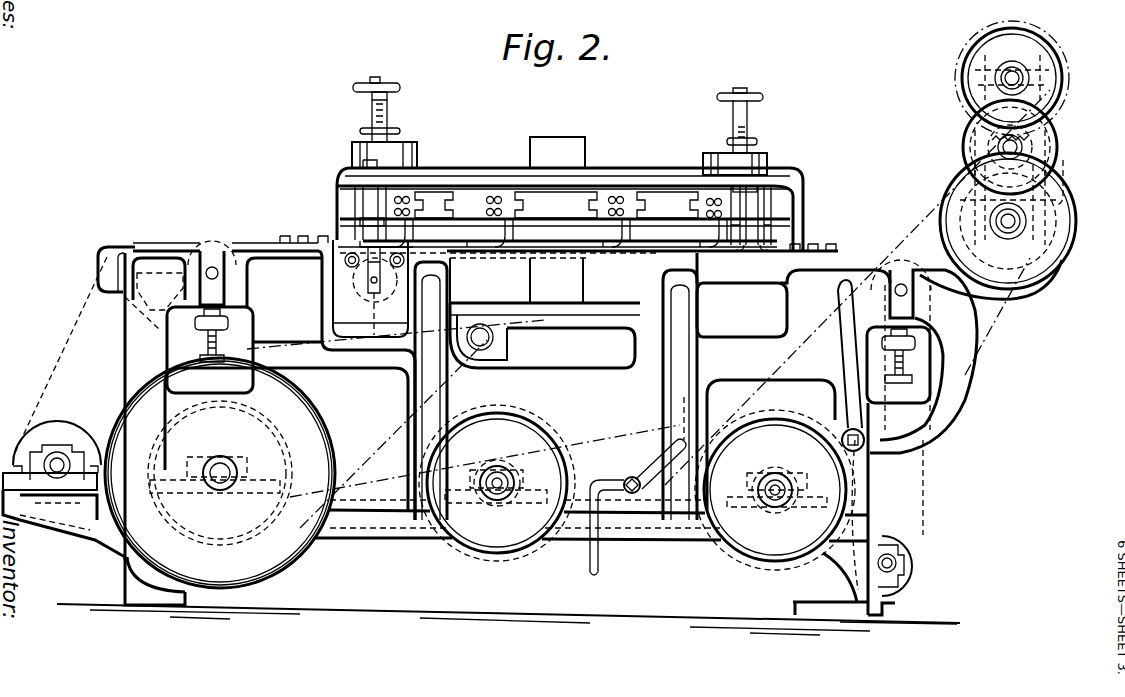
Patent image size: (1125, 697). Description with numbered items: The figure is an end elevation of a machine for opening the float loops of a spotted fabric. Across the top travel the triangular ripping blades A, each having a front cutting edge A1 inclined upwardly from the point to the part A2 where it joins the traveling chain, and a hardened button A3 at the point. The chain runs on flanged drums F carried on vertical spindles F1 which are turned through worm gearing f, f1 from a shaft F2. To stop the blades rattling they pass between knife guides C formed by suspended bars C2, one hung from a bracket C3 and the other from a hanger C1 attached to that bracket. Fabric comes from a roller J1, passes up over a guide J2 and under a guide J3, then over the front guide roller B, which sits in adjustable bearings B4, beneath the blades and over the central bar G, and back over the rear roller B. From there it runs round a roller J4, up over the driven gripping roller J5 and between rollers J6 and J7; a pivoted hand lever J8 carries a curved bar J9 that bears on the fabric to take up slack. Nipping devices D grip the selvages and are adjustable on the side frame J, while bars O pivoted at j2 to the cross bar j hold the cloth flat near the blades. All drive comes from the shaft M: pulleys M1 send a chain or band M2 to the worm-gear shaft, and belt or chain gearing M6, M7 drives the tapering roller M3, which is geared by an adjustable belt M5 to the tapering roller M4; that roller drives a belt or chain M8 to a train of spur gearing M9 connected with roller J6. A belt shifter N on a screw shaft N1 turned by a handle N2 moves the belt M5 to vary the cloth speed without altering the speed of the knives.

The shaft M is at (217, 472).
The pulleys M1 is at (267, 584).
The chain or band M2 is at (300, 437).
The tapering roller M3 is at (493, 560).
The tapering roller M4 is at (753, 558).
The adjustable belt M5 is at (620, 437).
The belt or chain gearing M6 is at (403, 547).
The belt or chain gearing M7 is at (320, 542).
The belt or chain M8 is at (990, 340).
The train of spur gearing M9 is at (990, 157).
The side frame J is at (168, 250).
The roller J1 is at (47, 430).
The guide J2 is at (110, 243).
The guide J3 is at (125, 297).
The roller J4 is at (907, 548).
The roller J5 is at (1053, 93).
The roller J6 is at (1052, 183).
The roller J7 is at (1050, 193).
The pivoted hand lever J8 is at (873, 283).
The curved bar J9 is at (867, 488).
The guide or bearing rollers B is at (868, 253).
The adjustable bearings B4 is at (215, 268).
The knife guides C is at (548, 131).
The hanger C1 is at (753, 205).
The guide bars C2 is at (375, 238).
The bracket C3 is at (737, 190).
The ripping blades A is at (607, 237).
The cutting edges A1 is at (537, 240).
The chain connection part A2 is at (617, 200).
The enlarged portion or button A3 is at (518, 243).
The flanged drums or disks F is at (470, 186).
The vertical spindles F1 is at (563, 135).
The shaft F2 is at (487, 340).
The worm gearing f is at (495, 330).
The worm gearing f1 is at (545, 335).
The central bar G is at (520, 280).
The bars O is at (360, 222).
The nipping devices D is at (348, 258).
The cross bar j is at (437, 175).
The pivot j2 is at (383, 157).
The belt shifter N is at (588, 545).
The screw shaft N1 is at (630, 492).
The handle N2 is at (665, 470).